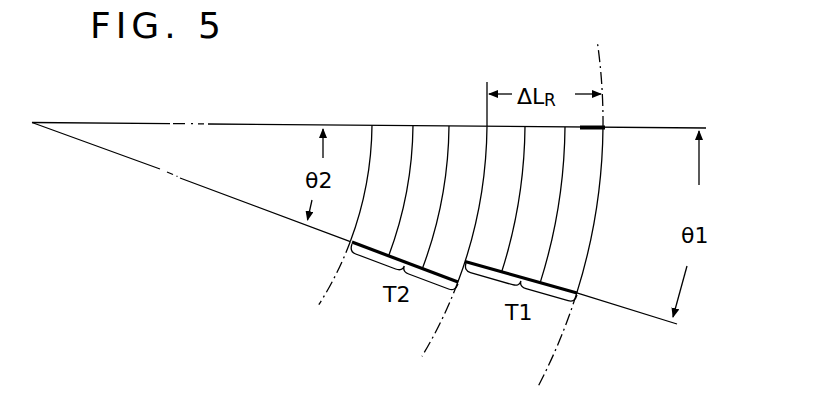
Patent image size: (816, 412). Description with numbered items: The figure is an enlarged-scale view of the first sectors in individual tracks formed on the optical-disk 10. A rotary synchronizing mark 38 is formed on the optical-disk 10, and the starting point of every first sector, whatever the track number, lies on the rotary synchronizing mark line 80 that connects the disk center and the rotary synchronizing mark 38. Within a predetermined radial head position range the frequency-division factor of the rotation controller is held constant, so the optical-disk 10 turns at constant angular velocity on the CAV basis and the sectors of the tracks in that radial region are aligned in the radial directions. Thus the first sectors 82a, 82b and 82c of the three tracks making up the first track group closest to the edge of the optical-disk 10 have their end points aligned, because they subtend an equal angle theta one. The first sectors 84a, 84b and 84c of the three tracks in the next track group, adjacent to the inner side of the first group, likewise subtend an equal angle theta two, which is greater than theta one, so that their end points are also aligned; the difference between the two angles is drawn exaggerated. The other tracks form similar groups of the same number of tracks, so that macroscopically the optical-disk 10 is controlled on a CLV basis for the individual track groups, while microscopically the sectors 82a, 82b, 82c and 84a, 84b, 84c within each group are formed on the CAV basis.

The rotary synchronizing mark line 80 is at (263, 126).
The first sector 84a is at (464, 134).
The first sector 84b is at (424, 132).
The first sector 84c is at (385, 132).
The first sector 82a is at (594, 157).
The first sector 82b is at (556, 188).
The first sector 82c is at (498, 238).
The rotary synchronizing mark 38 is at (605, 127).
The optical-disk 10 is at (563, 350).